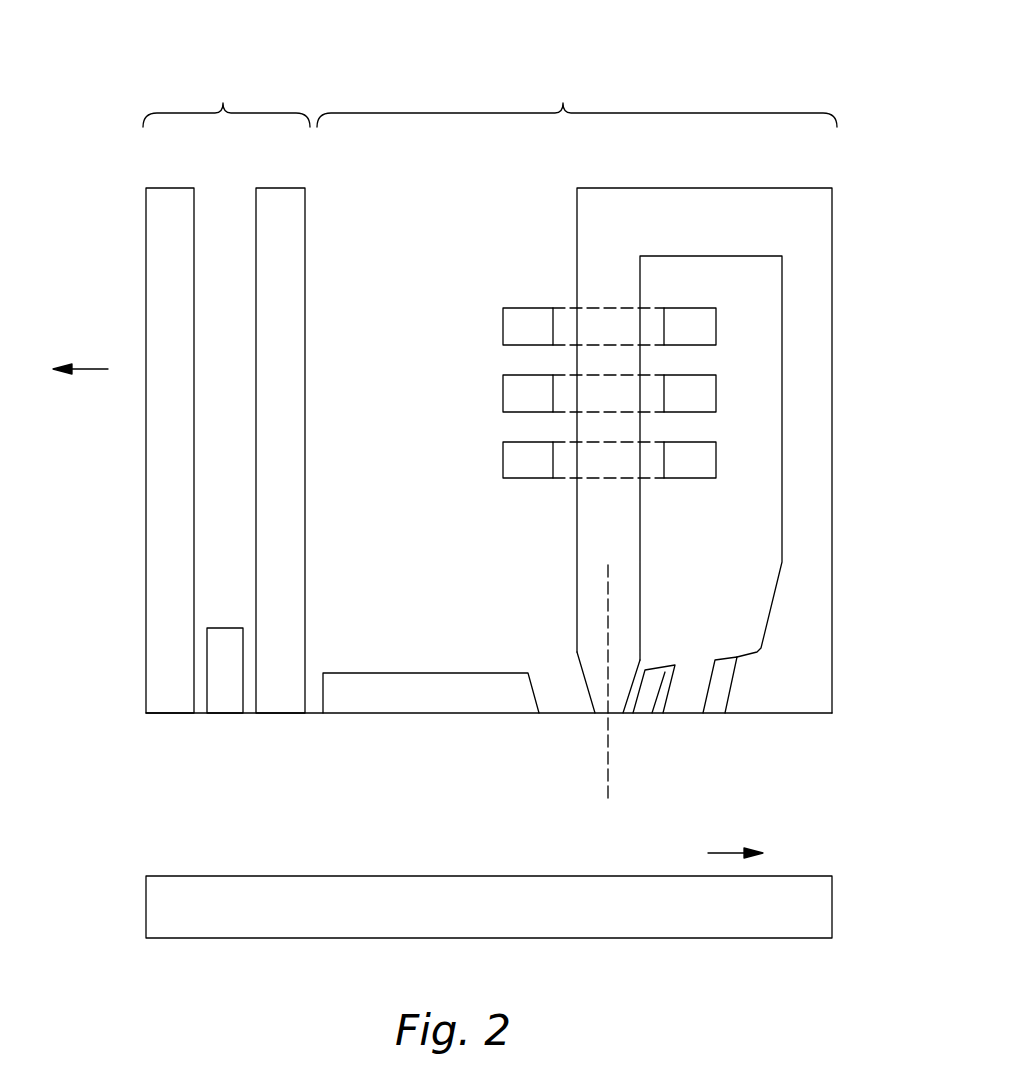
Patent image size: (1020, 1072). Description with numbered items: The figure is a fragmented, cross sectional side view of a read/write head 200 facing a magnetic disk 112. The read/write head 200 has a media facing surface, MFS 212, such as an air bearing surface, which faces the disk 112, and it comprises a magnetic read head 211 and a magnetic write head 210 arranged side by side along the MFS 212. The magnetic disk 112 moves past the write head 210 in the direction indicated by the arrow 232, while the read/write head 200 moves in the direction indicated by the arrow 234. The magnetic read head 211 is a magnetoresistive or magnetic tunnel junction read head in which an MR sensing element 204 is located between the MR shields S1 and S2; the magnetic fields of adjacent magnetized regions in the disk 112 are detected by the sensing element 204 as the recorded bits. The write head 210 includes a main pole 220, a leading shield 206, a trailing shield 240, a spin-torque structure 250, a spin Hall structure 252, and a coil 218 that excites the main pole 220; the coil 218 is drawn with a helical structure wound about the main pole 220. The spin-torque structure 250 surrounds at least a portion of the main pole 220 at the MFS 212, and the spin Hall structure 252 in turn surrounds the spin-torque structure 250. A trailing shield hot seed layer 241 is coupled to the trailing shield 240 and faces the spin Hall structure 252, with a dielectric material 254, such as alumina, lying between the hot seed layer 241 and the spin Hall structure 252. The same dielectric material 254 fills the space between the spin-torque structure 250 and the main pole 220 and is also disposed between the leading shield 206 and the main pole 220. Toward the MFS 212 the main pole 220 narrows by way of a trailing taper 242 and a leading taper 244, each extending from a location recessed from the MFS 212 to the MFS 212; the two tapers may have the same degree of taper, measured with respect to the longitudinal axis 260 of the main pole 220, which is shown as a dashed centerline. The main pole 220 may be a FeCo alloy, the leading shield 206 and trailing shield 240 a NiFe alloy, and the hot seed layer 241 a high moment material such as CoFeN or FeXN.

The read/write head 200 is at (143, 31).
The magnetic read head 211 is at (226, 101).
The magnetic write head 210 is at (577, 101).
The MR shield S1 is at (166, 715).
The MR shield S2 is at (263, 715).
The MR sensing element 204 is at (219, 715).
The leading shield 206 is at (350, 715).
The arrow 234 is at (90, 368).
The trailing shield 240 is at (822, 639).
The MFS 212 is at (825, 715).
The main pole 220 is at (632, 522).
The coil 218 is at (528, 478).
The leading taper 244 is at (580, 660).
The trailing taper 242 is at (640, 661).
The spin-torque structure 250 is at (644, 703).
The spin Hall structure 252 is at (670, 665).
The trailing shield hot seed layer 241 is at (713, 702).
The dielectric material 254 is at (567, 700).
The longitudinal axis 260 is at (608, 789).
The arrow 232 is at (723, 852).
The magnetic disk 112 is at (822, 907).